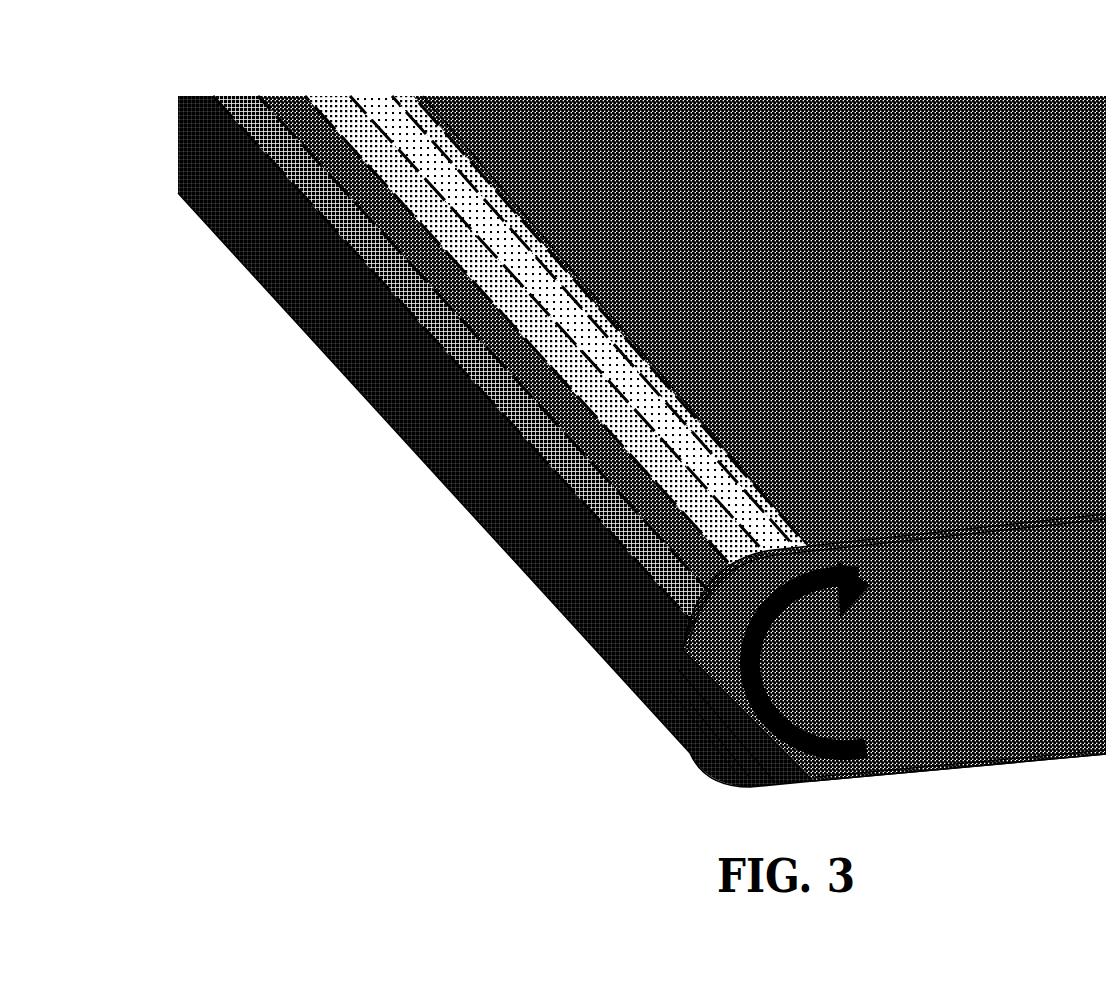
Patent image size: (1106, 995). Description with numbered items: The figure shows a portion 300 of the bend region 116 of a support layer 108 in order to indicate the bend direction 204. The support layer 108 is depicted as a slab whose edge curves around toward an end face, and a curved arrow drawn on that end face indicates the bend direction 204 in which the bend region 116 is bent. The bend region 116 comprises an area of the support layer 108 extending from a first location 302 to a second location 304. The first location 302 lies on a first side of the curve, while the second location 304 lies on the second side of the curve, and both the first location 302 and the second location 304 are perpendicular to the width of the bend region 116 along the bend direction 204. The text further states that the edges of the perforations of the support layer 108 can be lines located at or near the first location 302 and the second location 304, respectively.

The foldable display device portion 300 is at (588, 426).
The support layer 108 is at (788, 105).
The bend region 116 is at (395, 463).
The first location 302 is at (740, 452).
The second location 304 is at (808, 787).
The bend direction 204 is at (906, 655).